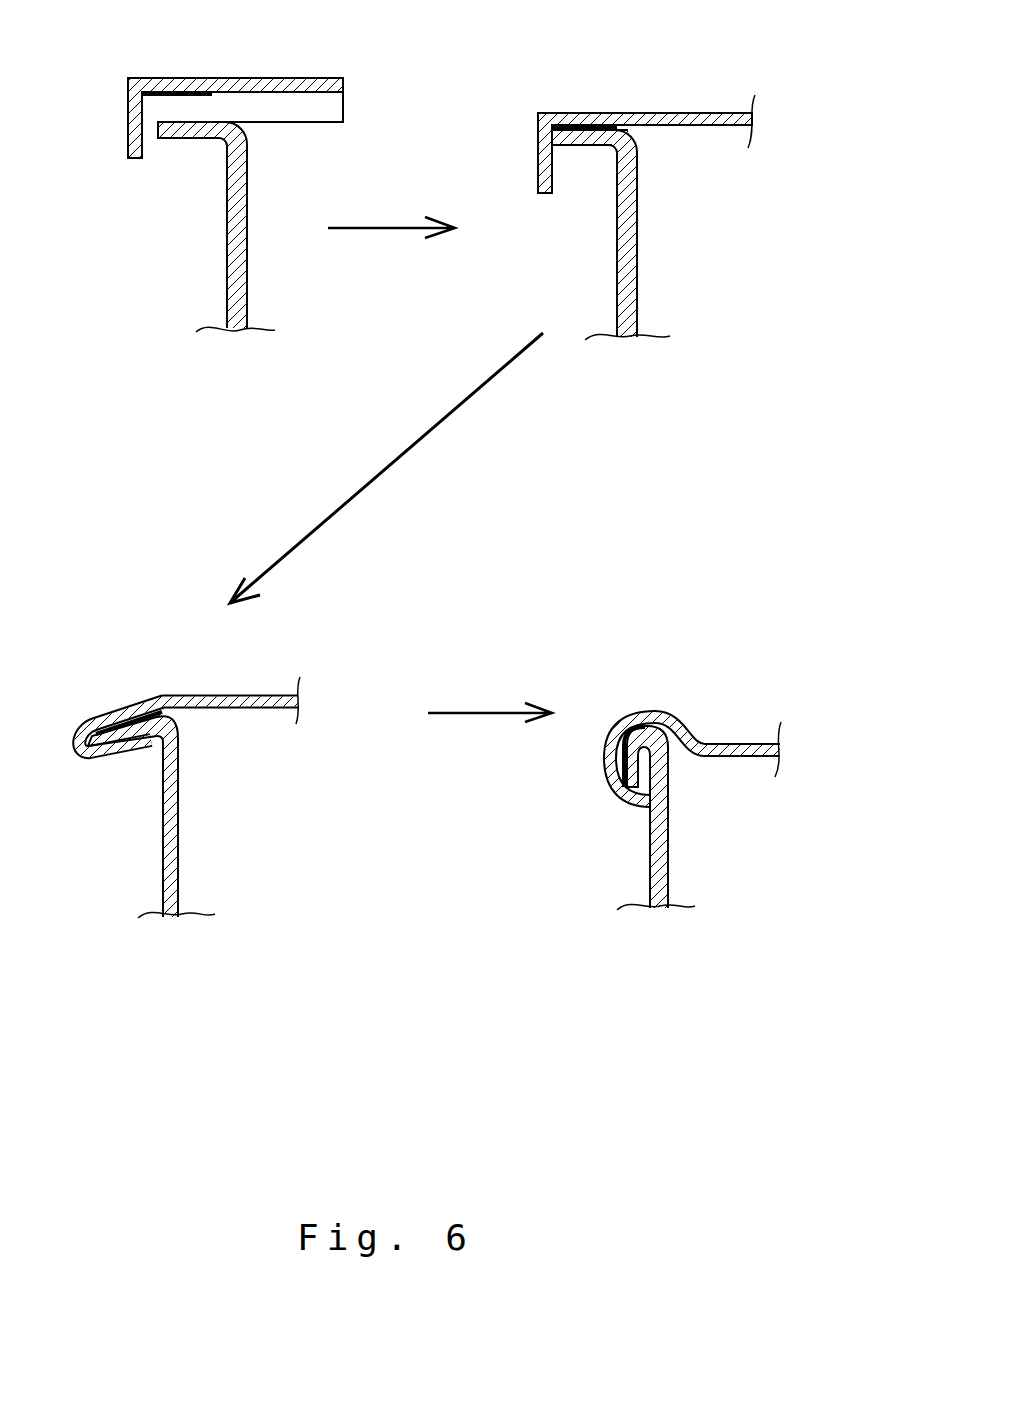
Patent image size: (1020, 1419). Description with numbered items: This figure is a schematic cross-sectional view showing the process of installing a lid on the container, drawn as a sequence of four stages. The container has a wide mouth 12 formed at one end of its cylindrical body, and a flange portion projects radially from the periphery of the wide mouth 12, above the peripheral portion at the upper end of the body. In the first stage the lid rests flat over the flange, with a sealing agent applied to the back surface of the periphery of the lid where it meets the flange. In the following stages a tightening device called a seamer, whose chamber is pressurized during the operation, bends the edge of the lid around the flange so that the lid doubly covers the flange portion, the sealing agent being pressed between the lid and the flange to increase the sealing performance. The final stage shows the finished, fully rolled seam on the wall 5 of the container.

The wide mouth 12 is at (305, 123).
The panel 5 is at (662, 860).